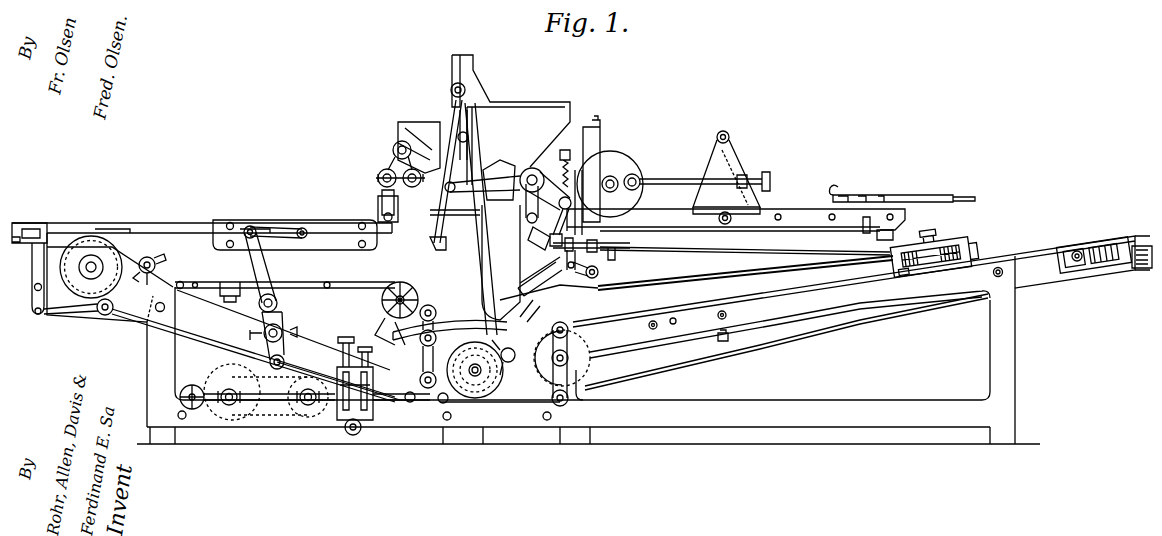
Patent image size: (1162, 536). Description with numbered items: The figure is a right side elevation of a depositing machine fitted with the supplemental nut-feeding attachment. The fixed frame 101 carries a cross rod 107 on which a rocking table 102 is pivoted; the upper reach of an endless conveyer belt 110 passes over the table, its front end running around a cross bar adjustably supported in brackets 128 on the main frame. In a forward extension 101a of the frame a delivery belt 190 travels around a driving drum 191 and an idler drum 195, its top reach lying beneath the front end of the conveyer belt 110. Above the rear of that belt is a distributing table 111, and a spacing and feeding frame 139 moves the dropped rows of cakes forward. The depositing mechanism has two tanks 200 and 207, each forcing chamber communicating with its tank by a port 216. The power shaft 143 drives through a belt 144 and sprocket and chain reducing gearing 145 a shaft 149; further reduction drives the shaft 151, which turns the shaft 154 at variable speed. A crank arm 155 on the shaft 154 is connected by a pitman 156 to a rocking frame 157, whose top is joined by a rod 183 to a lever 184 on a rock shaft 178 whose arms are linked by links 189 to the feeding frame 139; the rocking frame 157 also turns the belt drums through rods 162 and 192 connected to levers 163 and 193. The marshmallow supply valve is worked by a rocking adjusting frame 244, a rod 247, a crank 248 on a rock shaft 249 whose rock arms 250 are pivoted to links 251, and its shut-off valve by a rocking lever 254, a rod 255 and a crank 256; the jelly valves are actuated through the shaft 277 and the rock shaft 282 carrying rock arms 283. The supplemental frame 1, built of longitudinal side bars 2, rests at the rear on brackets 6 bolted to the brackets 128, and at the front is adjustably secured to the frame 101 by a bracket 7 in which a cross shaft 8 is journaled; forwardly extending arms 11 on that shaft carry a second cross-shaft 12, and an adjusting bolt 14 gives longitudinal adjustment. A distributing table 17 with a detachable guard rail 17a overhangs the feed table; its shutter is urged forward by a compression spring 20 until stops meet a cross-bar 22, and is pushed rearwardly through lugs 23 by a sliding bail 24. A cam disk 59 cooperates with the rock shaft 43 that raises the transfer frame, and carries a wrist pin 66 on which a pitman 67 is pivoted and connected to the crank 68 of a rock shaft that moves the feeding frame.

The supplemental frame 1 is at (793, 217).
The longitudinal side bars 2 is at (710, 225).
The brackets 6 is at (887, 238).
The bracket 7 is at (539, 259).
The cross shaft 8 is at (542, 272).
The forwardly extending arms 11 is at (696, 279).
The second cross-shaft 12 is at (598, 272).
The adjusting bolt 14 is at (563, 241).
The distributing table 17 is at (900, 200).
The detachable guard rail 17a is at (833, 187).
The compression spring 20 is at (963, 198).
The cross-bar 22 is at (880, 202).
The lugs 23 is at (862, 203).
The sliding bail 24 is at (843, 205).
The rock shaft 43 is at (612, 176).
The cam disk 59 is at (634, 172).
The wrist pin 66 is at (638, 176).
The pitman 67 is at (675, 178).
The crank 68 is at (737, 152).
The fixed frame 101 is at (157, 347).
The forward extension 101a is at (1027, 357).
The rocking table 102 is at (133, 243).
The cross rod 107 is at (157, 265).
The endless conveyer belt 110 is at (660, 250).
The distributing table 111 is at (68, 232).
The brackets 128 is at (953, 240).
The spacing and feeding frame 139 is at (190, 233).
The power shaft 143 is at (230, 405).
The belt 144 is at (267, 380).
The sprocket and chain reducing gearing 145 is at (325, 420).
The shaft 149 is at (383, 422).
The shaft 151 is at (477, 372).
The shaft 154 is at (428, 390).
The crank arm 155 is at (447, 403).
The pitman 156 is at (407, 403).
The rocking frame 157 is at (350, 437).
The rod 162 is at (210, 342).
The lever 163 is at (97, 305).
The rock shaft 178 is at (278, 305).
The rod 183 is at (290, 365).
The lever 184 is at (285, 318).
The links 189 is at (263, 232).
The delivery belt 190 is at (652, 369).
The driving drum 191 is at (590, 357).
The rod 192 is at (533, 402).
The lever 193 is at (563, 378).
The idler drum 195 is at (1073, 270).
The tank 200 is at (533, 105).
The tank 207 is at (418, 122).
The port 216 is at (460, 235).
The rocking adjusting frame 244 is at (470, 327).
The rod 247 is at (483, 287).
The crank 248 is at (502, 215).
The rock shaft 249 is at (530, 168).
The rock arms 250 is at (487, 183).
The links 251 is at (463, 177).
The rocking lever 254 is at (508, 362).
The rod 255 is at (533, 300).
The crank 256 is at (545, 185).
The shaft 277 is at (400, 146).
The rock shaft 282 is at (412, 187).
The rock arms 283 is at (380, 204).